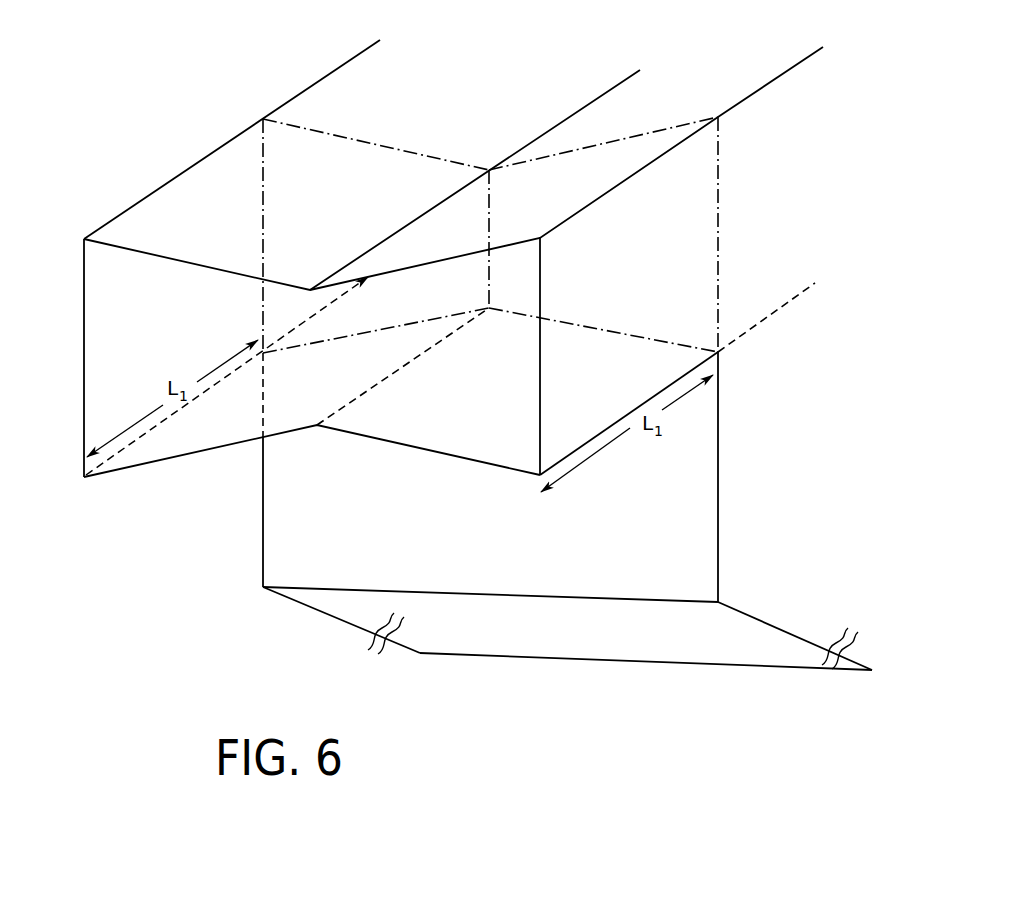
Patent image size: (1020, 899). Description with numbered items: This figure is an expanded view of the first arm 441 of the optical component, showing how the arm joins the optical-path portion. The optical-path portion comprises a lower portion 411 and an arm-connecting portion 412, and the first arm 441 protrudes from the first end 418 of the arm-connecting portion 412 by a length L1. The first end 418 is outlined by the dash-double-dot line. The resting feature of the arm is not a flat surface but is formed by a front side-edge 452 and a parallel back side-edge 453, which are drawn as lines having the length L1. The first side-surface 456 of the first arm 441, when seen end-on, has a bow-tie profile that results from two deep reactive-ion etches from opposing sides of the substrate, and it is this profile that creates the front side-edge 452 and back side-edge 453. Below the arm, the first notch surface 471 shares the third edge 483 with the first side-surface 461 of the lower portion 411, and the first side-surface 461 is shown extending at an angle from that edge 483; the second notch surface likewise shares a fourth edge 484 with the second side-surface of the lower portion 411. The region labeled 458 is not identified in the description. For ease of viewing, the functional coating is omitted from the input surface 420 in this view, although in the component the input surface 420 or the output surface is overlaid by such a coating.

The lower portion 411 is at (596, 536).
The arm-connecting portion 412 is at (837, 246).
The first end 418 is at (598, 172).
The input surface 420 is at (787, 588).
The first arm 441 is at (665, 357).
The front side-edge 452 is at (618, 420).
The back side-edge 453 is at (132, 435).
The first side-surface of the first arm 456 is at (98, 413).
The top surface of first wedge 458 is at (308, 117).
The first side-surface of the lower portion 461 is at (428, 635).
The first notch surface 471 is at (287, 518).
The third edge 483 is at (337, 588).
The fourth edge 484 is at (595, 648).